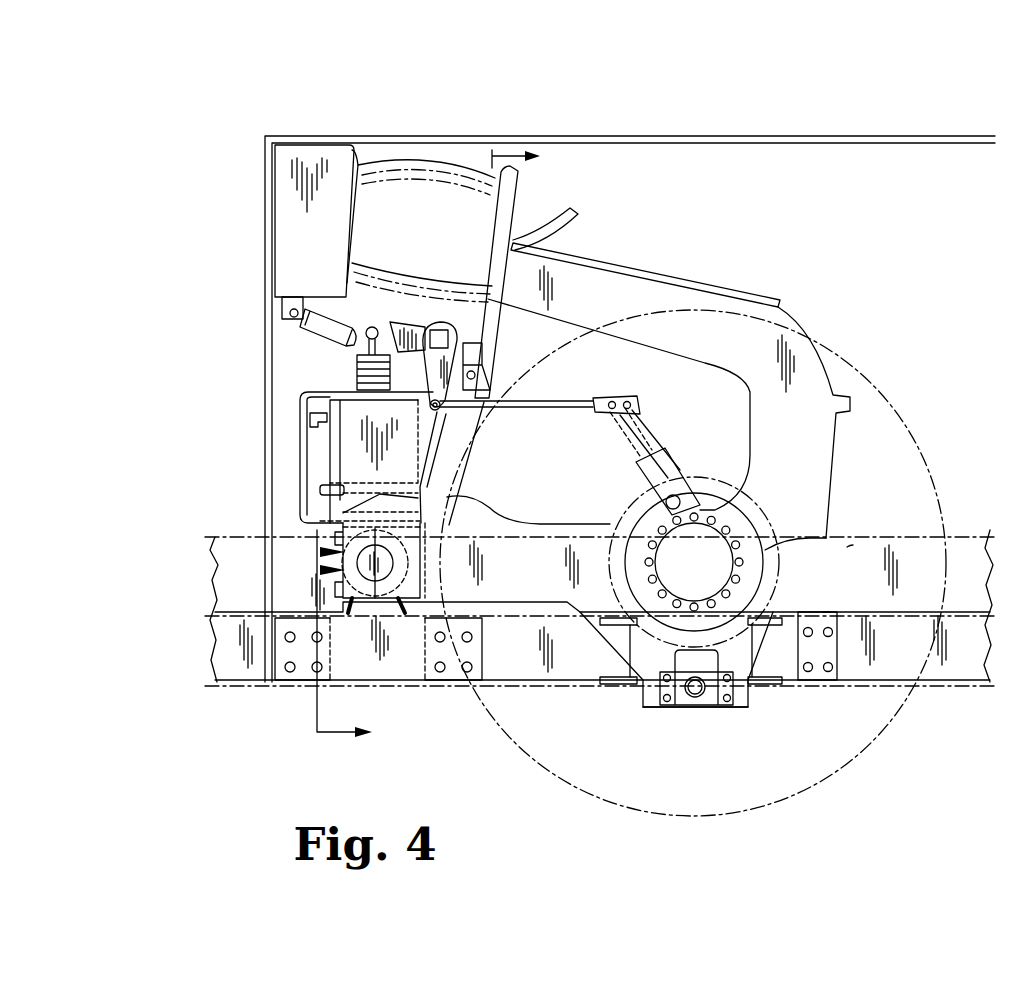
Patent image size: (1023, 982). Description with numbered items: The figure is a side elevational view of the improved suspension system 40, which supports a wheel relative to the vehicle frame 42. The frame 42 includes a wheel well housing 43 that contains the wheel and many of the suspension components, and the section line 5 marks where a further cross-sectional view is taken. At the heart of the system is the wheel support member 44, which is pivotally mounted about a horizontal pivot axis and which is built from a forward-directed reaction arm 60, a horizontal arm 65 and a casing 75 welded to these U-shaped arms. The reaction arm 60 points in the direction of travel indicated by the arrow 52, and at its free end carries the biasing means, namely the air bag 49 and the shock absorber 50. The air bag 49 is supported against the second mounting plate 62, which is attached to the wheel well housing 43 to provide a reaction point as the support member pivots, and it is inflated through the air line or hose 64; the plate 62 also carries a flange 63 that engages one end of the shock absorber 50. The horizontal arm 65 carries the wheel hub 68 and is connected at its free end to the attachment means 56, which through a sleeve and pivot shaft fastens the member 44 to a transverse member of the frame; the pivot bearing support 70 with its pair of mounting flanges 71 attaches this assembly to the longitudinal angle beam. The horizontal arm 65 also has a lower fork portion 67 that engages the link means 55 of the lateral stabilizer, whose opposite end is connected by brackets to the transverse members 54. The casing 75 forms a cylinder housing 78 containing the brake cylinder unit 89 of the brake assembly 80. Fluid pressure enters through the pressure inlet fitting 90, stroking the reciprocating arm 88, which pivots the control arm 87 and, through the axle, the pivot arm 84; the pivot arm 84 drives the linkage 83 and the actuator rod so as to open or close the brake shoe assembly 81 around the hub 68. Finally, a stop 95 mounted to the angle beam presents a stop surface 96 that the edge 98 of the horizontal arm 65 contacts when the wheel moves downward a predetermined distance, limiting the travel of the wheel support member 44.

The section line 5- 5 is at (425, 447).
The improved suspension system 40 is at (843, 300).
The vehicle frame 42 is at (865, 688).
The wheel well housing 43 is at (595, 136).
The wheel support member 44 is at (810, 437).
The air bag 49 is at (380, 180).
The shock absorber 50 is at (325, 335).
The arrow representing direction of travel 52 is at (110, 371).
The transverse members 54 is at (768, 684).
The link means 55 is at (714, 718).
The attachment means 56 is at (320, 550).
The reaction arm 60 is at (595, 285).
The second mounting plate 62 is at (310, 150).
The flange 63 is at (284, 303).
The air line or hose 64 is at (580, 210).
The horizontal arm 65 is at (500, 620).
The fork portion 67 is at (648, 700).
The wheel hub 68 is at (760, 517).
The pivot bearing support 70 is at (320, 570).
The mounting flanges 71 is at (437, 682).
The casing 75 is at (303, 400).
The cylinder housing 78 is at (330, 457).
The brake assembly 80 is at (587, 432).
The brake shoe assembly 81 is at (662, 465).
The linkage 83 is at (540, 418).
The pivot arm 84 is at (460, 340).
The control arm 87 is at (440, 323).
The reciprocating arm 88 is at (357, 363).
The brake cylinder unit 89 is at (328, 489).
The pressure inlet fitting 90 is at (318, 417).
The stop 95 is at (830, 655).
The stop surface 96 is at (823, 612).
The edge 98 is at (847, 547).